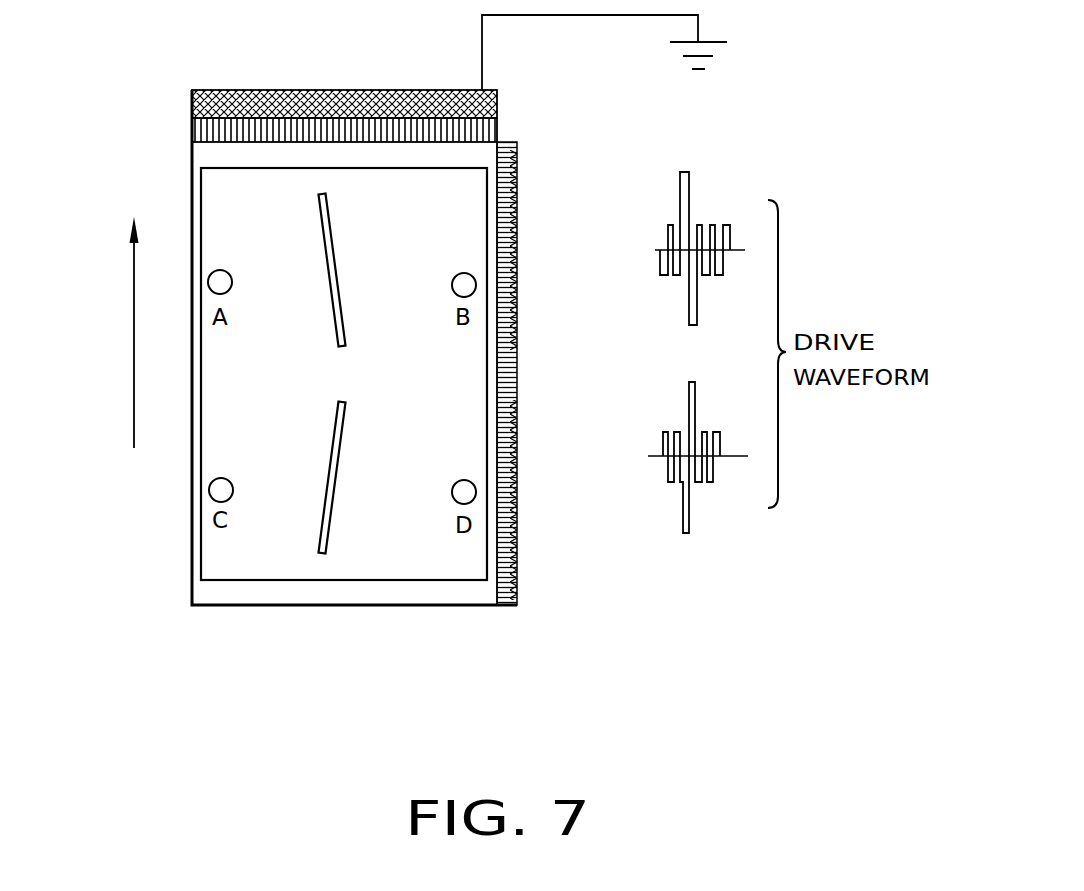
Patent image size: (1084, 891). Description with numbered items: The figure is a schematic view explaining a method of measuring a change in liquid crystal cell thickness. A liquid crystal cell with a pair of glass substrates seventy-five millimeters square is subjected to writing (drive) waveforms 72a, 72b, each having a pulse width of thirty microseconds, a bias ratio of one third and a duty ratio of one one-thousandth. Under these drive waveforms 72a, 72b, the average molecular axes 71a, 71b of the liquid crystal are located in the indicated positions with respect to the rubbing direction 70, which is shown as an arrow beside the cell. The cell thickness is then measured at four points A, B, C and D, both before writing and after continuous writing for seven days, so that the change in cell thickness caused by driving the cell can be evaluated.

The rubbing direction 70 is at (110, 381).
The average molecular axis 71a is at (345, 342).
The average molecular axis 71b is at (326, 543).
The writing (drive) waveform 72a is at (517, 250).
The writing (drive) waveform 72b is at (517, 456).